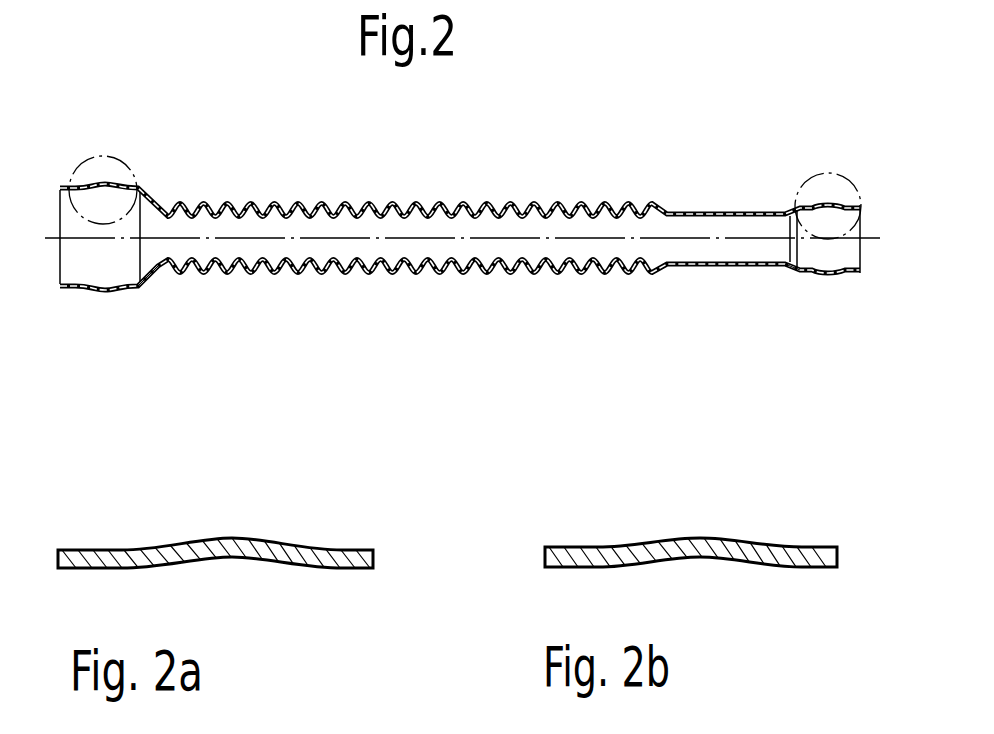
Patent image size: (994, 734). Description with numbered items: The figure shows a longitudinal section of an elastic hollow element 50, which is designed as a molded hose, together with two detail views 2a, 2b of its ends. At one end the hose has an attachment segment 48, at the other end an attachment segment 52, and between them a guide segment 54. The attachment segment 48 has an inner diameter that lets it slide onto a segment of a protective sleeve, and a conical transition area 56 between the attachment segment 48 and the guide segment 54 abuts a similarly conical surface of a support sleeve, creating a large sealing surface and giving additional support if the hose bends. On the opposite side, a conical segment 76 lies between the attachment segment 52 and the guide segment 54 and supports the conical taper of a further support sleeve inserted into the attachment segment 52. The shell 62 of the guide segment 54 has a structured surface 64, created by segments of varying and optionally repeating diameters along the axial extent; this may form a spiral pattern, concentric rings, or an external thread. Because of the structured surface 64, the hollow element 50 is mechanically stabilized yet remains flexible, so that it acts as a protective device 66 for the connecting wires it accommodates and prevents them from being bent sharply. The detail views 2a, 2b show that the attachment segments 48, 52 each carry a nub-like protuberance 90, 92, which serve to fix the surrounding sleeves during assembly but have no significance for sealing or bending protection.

In FIG. 2, the first attachment segment detail 2a is at (95, 155).
In FIG. 2, the second attachment segment detail 2b is at (827, 172).
In FIG. 2, the attachment segment 48 is at (160, 168).
In FIG. 2A, the attachment segment 48 is at (313, 568).
In FIG. 2, the elastic hollow element 50 is at (550, 180).
In FIG. 2, the attachment segment 52 is at (795, 185).
In FIG. 2B, the attachment segment 52 is at (797, 567).
In FIG. 2, the guide segment 54 is at (418, 285).
In FIG. 2, the conical transition area 56 is at (153, 280).
In FIG. 2, the shell 62 is at (557, 277).
In FIG. 2, the structured surface 64 is at (510, 277).
In FIG. 2, the protective device 66 is at (342, 287).
In FIG. 2, the conical segment 76 is at (790, 270).
In FIG. 2A, the nub-like protuberance 90 is at (237, 538).
In FIG. 2B, the nub-like protuberance 92 is at (708, 538).